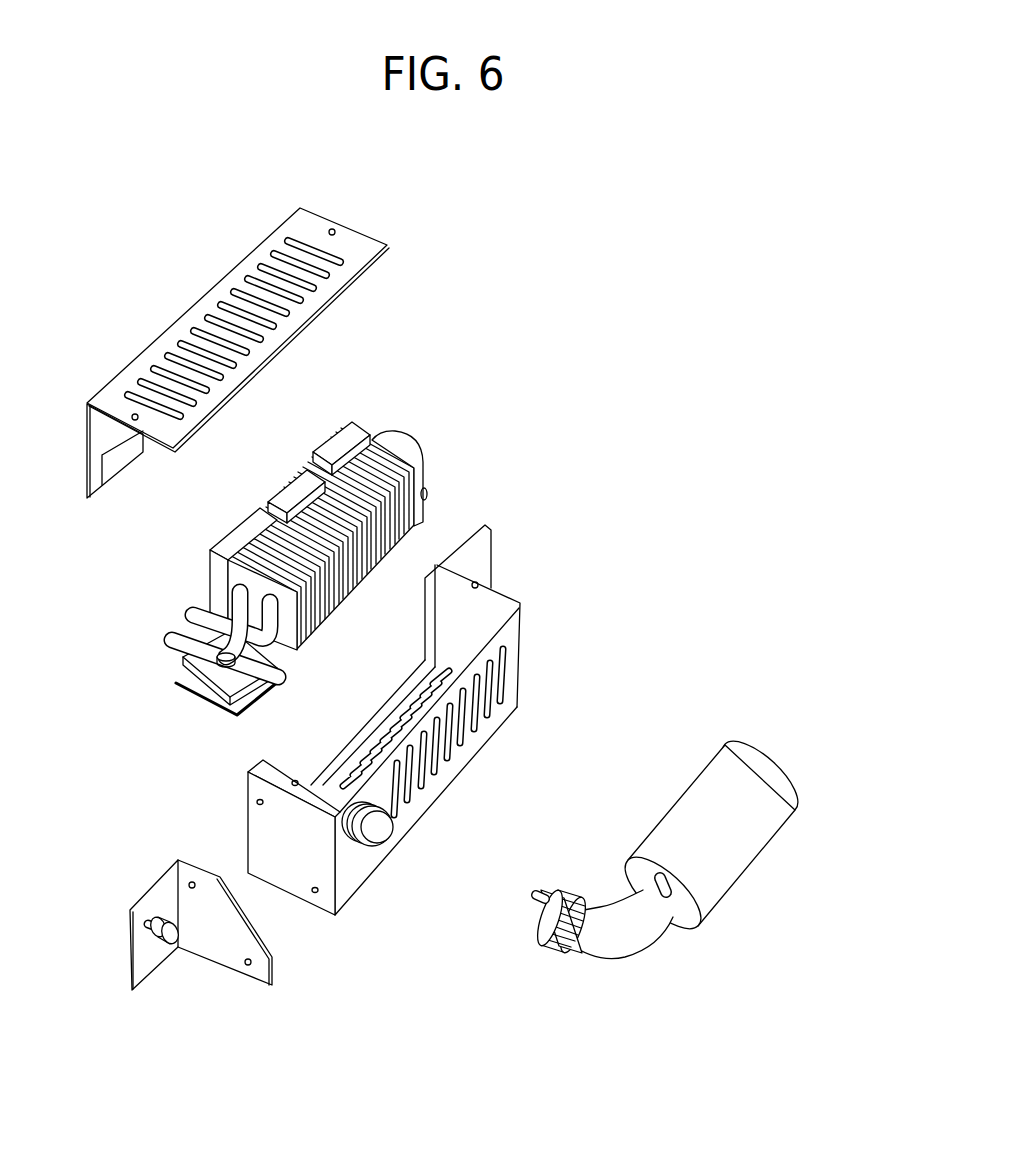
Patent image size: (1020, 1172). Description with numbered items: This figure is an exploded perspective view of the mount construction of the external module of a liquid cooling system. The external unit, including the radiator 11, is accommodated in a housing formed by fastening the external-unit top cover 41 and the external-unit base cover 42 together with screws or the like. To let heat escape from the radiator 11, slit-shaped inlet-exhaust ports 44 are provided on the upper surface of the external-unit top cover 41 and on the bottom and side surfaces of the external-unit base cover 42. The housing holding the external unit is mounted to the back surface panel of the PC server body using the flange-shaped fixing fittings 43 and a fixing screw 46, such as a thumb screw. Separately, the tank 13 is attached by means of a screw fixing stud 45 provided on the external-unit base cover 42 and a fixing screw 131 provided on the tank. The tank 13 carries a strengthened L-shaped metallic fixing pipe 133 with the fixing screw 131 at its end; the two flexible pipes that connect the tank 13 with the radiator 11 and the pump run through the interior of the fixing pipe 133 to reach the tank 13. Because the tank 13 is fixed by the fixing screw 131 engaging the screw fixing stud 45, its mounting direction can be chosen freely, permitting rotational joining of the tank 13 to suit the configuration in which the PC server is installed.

The radiator 11 is at (397, 440).
The tank 13 is at (752, 768).
The fixing screw 131 is at (545, 937).
The fixing pipe 133 is at (640, 938).
The external-unit top cover 41 is at (198, 315).
The external-unit base cover 42 is at (266, 823).
The fixing fittings 43 is at (224, 950).
The inlet-exhaust ports 44 is at (512, 660).
The screw fixing stud 45 is at (363, 850).
The fixing screw 46 is at (163, 946).